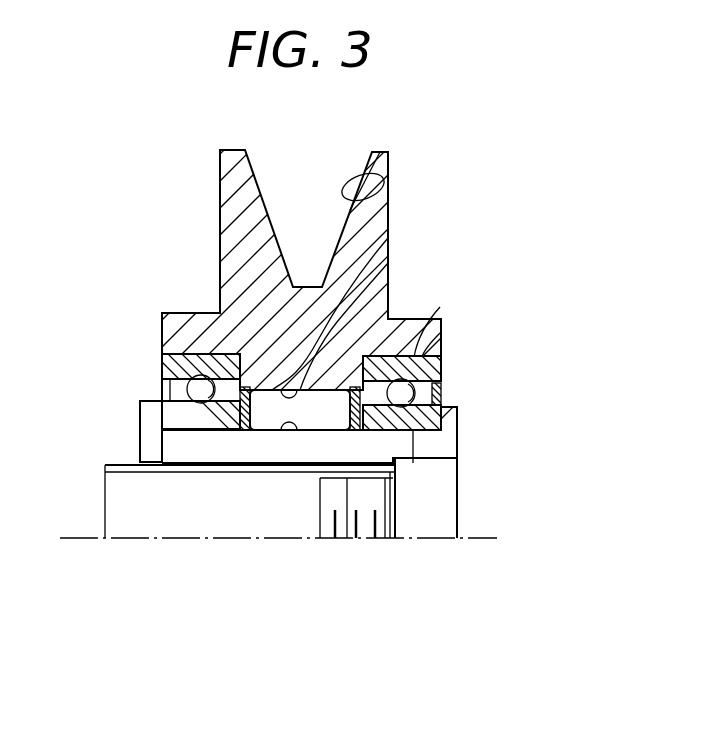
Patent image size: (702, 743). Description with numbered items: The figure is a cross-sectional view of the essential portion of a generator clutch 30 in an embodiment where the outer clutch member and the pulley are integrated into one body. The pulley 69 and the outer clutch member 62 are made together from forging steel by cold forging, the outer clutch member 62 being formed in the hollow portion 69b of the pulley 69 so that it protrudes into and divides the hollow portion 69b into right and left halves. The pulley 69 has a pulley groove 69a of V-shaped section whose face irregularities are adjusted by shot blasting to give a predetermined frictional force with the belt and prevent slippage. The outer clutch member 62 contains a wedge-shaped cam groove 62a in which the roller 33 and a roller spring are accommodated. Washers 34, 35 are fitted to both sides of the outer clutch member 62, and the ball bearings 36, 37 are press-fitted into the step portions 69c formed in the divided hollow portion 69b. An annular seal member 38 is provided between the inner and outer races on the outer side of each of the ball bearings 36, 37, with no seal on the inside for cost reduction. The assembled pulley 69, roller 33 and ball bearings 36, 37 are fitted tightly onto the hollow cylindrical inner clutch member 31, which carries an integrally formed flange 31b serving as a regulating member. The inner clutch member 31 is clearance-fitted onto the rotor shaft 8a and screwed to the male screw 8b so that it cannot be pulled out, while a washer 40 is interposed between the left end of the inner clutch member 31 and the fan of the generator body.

The rotor shaft 8a is at (119, 520).
The male screw 8b is at (357, 466).
The clutch 30 is at (455, 451).
The inner clutch member 31 is at (458, 430).
The flange 31b is at (297, 431).
The roller 33 is at (390, 298).
The washer 34 is at (243, 431).
The washer 35 is at (353, 431).
The ball bearing 36 is at (197, 428).
The ball bearing 37 is at (413, 431).
The annular seal member 38 is at (161, 382).
The washer 40 is at (141, 404).
The outer clutch member 62 is at (285, 372).
The wedge-shaped cam groove 62a is at (390, 264).
The pulley 69 is at (379, 152).
The pulley groove 69a is at (372, 197).
The hollow portion 69b is at (442, 333).
The step portions 69c is at (420, 350).